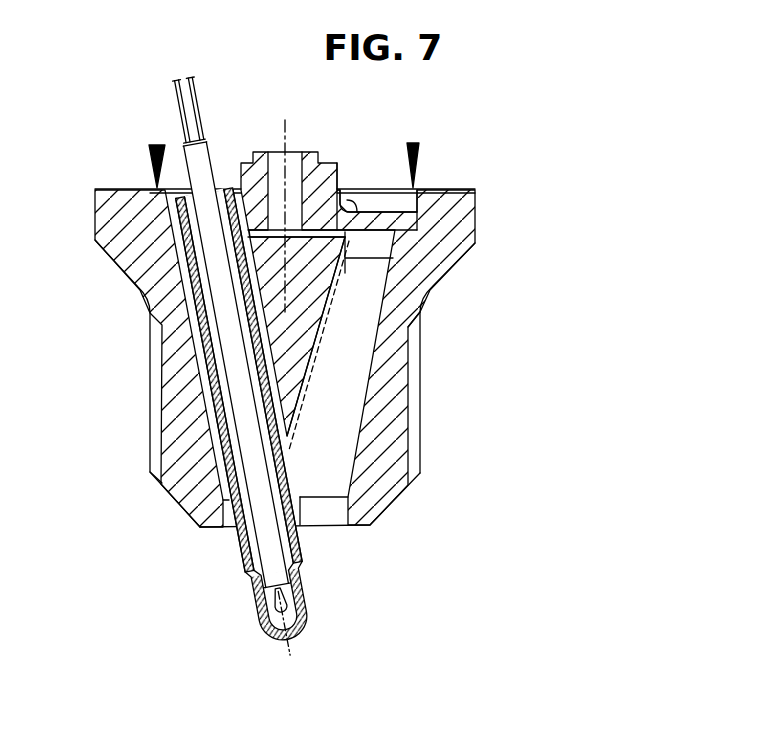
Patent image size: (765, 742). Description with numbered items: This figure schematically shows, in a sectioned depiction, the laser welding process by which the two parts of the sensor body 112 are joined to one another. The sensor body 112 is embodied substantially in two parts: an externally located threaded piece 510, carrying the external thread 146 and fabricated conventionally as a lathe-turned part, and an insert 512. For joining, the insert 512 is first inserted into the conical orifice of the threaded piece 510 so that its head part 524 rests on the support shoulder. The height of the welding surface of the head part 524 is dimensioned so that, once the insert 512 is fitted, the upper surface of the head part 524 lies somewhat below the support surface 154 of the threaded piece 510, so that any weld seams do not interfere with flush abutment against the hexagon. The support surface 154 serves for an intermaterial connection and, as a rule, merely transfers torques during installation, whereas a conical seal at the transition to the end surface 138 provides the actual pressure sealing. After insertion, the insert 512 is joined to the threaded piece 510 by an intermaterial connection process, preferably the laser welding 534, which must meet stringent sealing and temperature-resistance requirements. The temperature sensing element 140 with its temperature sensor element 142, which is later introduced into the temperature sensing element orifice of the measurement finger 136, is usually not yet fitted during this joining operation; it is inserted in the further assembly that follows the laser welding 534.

The sensor body 112 is at (326, 345).
The measurement finger 136 is at (257, 598).
The end surface 138 is at (394, 503).
The temperature sensing element 140 is at (217, 267).
The temperature sensor element 142 is at (290, 606).
The external thread 146 is at (413, 425).
The support surface 154 is at (112, 185).
The threaded piece 510 is at (183, 422).
The insert 512 is at (301, 325).
The head part 524 is at (388, 225).
The laser welding 534 is at (430, 150).